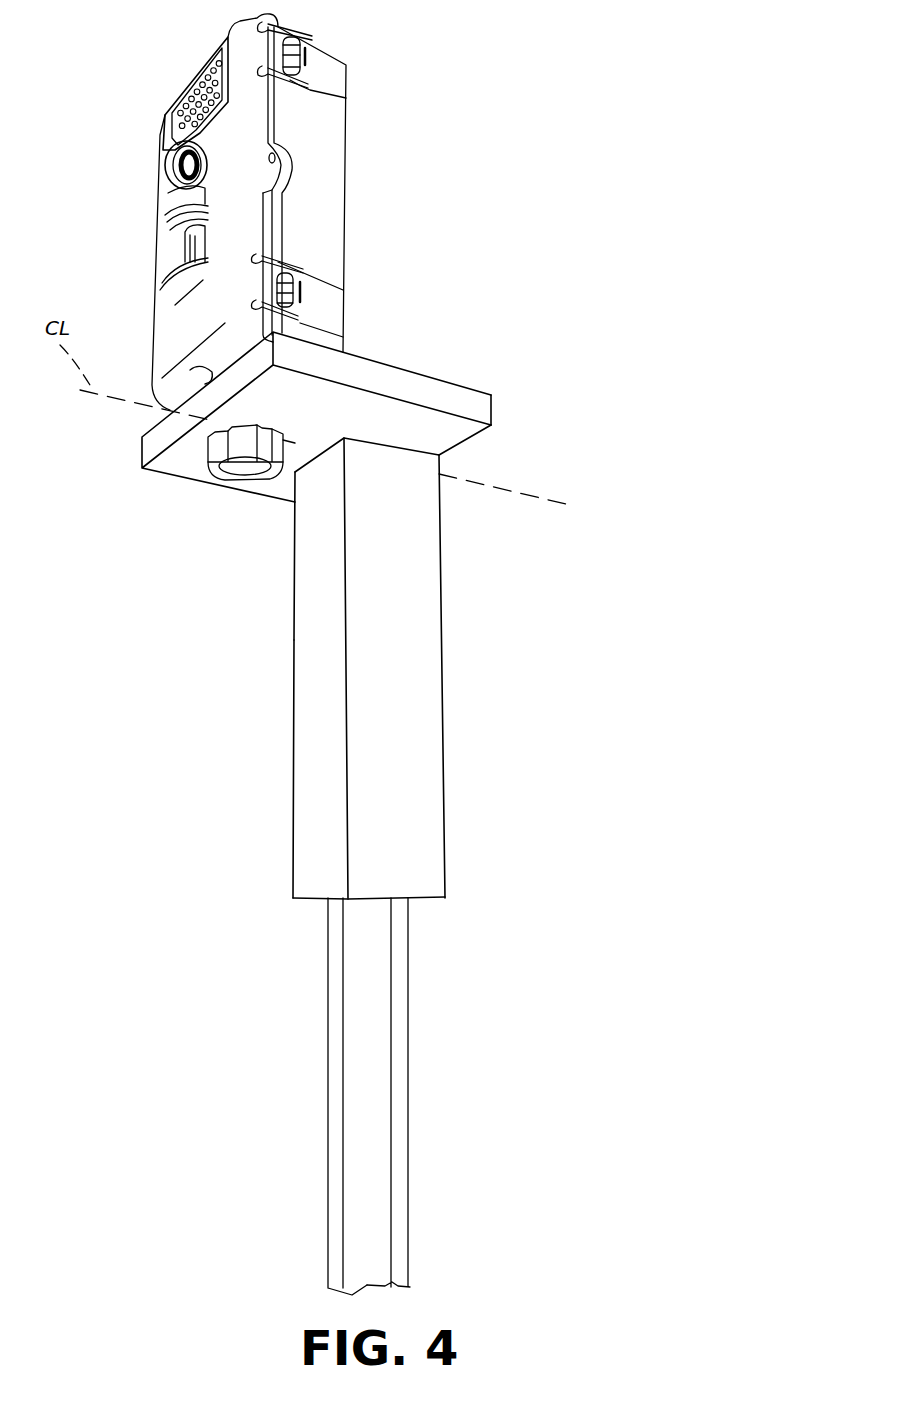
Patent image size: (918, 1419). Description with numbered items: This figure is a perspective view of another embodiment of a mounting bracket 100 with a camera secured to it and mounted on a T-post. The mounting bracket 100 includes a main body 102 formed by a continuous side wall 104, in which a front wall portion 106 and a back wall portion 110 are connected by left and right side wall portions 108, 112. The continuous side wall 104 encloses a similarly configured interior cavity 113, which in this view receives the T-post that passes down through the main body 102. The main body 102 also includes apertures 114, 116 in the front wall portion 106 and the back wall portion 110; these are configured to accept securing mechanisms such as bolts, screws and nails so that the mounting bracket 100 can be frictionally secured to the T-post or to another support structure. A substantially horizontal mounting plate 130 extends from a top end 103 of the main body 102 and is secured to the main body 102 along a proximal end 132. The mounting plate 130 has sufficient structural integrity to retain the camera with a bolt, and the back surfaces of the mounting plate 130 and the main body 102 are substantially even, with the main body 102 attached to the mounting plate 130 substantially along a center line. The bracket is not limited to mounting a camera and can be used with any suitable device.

The mounting bracket 100 is at (215, 782).
The main body 102 is at (455, 633).
The top end 103 is at (448, 454).
The continuous side wall 104 is at (377, 512).
The front wall portion 106 is at (313, 677).
The left side wall portion 108 is at (310, 902).
The back wall portion 110 is at (443, 702).
The right side wall portion 112 is at (412, 808).
The interior cavity 113 is at (422, 902).
The aperture 114 is at (320, 802).
The aperture 116 is at (312, 585).
The substantially horizontal mounting plate 130 is at (393, 378).
The proximal end 132 is at (493, 408).